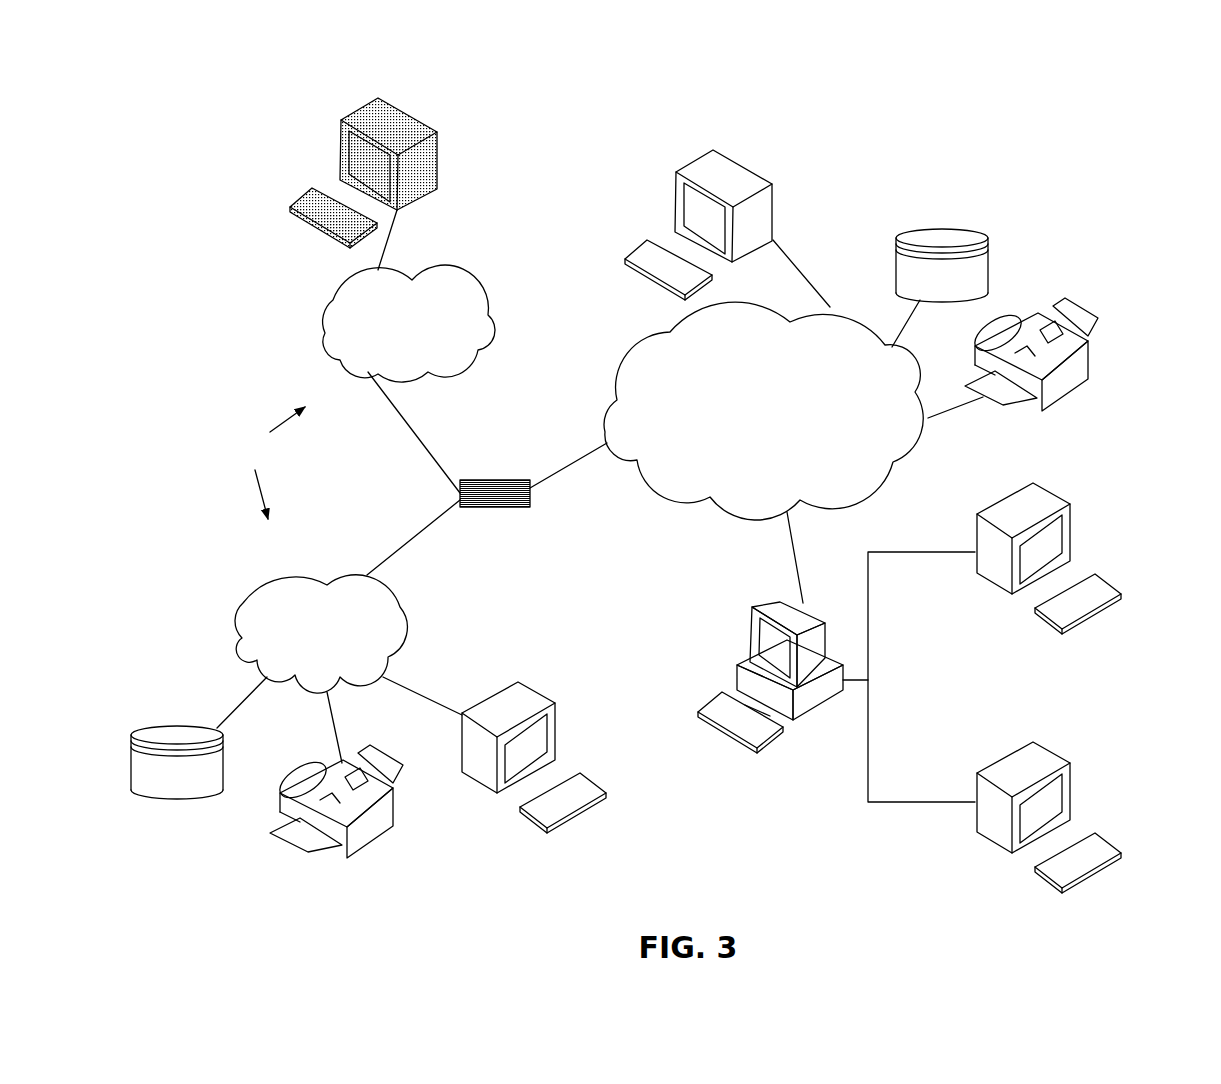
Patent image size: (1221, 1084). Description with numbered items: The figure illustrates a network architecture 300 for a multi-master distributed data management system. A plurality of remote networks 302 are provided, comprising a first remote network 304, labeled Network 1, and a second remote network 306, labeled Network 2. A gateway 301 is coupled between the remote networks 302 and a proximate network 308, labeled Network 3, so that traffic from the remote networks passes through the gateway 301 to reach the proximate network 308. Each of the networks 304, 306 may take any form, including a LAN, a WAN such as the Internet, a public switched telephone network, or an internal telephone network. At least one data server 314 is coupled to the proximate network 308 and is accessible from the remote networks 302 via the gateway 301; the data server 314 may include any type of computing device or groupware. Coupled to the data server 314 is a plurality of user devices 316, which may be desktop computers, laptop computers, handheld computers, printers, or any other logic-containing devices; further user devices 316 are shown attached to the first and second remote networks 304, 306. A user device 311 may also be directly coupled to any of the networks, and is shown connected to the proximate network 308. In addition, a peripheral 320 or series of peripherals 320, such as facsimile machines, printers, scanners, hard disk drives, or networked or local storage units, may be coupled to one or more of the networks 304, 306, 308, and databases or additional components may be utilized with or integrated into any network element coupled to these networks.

The network architecture 300 is at (692, 67).
The gateway 301 is at (493, 480).
The remote networks 302 is at (266, 463).
The first remote network 304 is at (242, 603).
The second remote network 306 is at (495, 330).
The proximate network 308 is at (892, 472).
The user device 311 is at (775, 218).
The data server 314 is at (745, 632).
The user devices 316 is at (440, 163).
The peripheral 320 is at (175, 802).